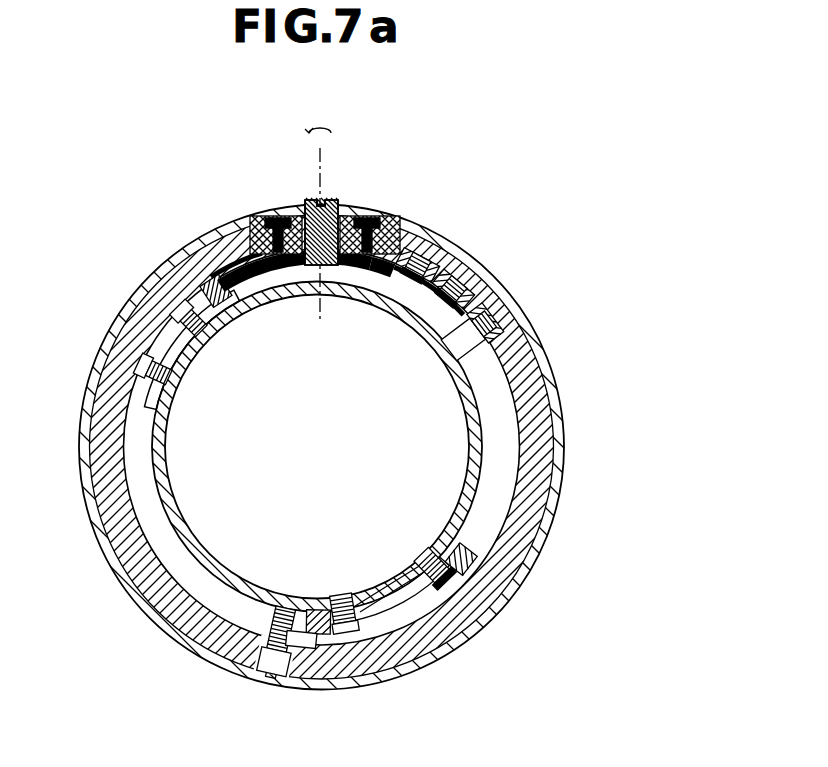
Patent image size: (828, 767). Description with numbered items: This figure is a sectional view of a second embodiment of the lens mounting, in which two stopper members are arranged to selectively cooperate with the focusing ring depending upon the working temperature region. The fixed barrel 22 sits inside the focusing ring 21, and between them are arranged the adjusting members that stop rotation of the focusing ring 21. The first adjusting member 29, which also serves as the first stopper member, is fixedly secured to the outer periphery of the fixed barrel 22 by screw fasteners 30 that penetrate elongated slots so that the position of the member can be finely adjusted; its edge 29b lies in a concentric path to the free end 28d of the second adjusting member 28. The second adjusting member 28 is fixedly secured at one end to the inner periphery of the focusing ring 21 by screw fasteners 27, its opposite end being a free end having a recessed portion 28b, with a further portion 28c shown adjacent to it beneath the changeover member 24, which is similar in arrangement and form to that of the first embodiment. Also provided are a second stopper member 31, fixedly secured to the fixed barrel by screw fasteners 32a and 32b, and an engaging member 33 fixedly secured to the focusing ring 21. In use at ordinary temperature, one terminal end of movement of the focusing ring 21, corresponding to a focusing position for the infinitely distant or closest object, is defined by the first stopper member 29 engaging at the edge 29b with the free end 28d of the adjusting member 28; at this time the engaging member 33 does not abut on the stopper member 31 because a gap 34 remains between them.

The focusing ring 21 is at (543, 345).
The fixed barrel 22 is at (170, 418).
The changeover member 24 is at (331, 205).
The screw fasteners 27 is at (467, 268).
The second adjusting member 28 is at (386, 262).
The recessed portion 28b is at (340, 268).
The segment portion 28c is at (308, 268).
The free end 28d is at (262, 235).
The first adjusting member 29 is at (217, 277).
The edge 29b is at (243, 298).
The screw fasteners 30 is at (192, 322).
The second stopper member 31 is at (322, 632).
The screw fastener 32a is at (350, 598).
The screw fastener 32b is at (432, 548).
The engaging member 33 is at (275, 608).
The gap 34 is at (302, 638).